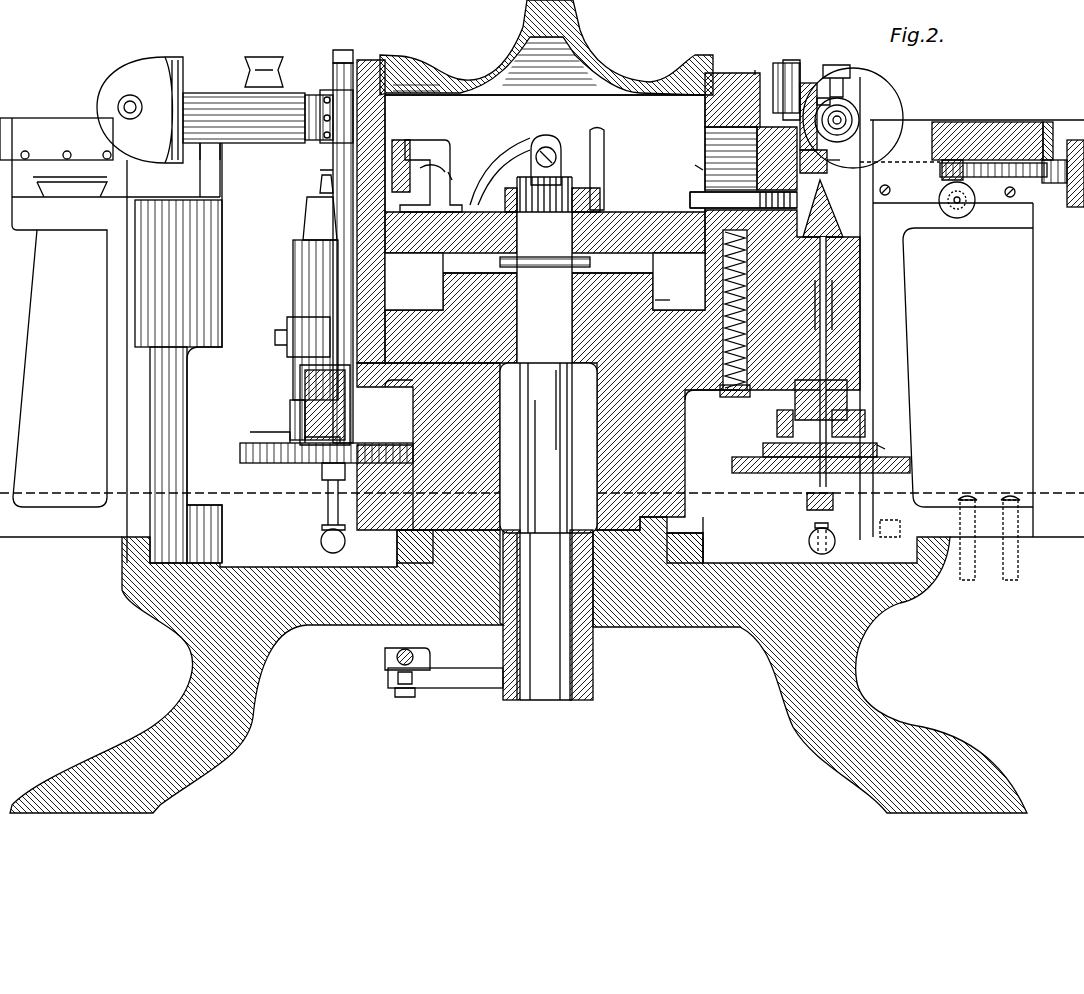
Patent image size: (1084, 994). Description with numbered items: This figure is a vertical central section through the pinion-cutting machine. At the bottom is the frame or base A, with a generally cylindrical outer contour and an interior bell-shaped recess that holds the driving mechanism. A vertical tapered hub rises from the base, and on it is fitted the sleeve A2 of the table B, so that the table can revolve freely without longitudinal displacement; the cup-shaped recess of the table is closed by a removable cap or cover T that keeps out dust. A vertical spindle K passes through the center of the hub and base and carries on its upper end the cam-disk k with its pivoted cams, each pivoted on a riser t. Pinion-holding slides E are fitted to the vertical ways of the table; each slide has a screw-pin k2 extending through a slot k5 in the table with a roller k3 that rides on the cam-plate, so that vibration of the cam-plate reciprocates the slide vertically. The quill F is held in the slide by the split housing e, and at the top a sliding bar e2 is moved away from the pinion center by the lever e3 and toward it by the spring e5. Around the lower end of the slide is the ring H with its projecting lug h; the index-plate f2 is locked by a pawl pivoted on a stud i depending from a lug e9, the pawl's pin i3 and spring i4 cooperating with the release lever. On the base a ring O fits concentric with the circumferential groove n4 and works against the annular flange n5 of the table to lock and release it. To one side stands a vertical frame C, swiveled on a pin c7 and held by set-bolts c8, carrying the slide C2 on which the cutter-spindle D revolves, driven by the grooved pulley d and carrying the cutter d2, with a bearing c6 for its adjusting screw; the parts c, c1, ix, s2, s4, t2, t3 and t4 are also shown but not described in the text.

The frame or base A is at (542, 648).
The sleeve of the table A2 is at (388, 490).
The table B is at (545, 111).
The vertical frame C is at (548, 327).
The slide C2 is at (56, 139).
The bracket c is at (590, 342).
The roller c1 is at (1040, 212).
The bearing c6 is at (1060, 135).
The pin c7 is at (896, 521).
The set-bolt c8 is at (989, 527).
The cutter-spindle D is at (277, 143).
The grooved pulley d is at (140, 110).
The cutter d2 is at (330, 80).
The pinion-holding slide E is at (357, 283).
The split housing e is at (833, 158).
The sliding bar e2 is at (330, 55).
The lever e3 is at (819, 87).
The spring e5 is at (790, 58).
The lug e9 is at (328, 392).
The quill F is at (305, 228).
The index-plate f2 is at (262, 452).
The ring H is at (785, 418).
The projecting lug h is at (865, 408).
The stud i is at (458, 145).
The pinion ix is at (300, 413).
The pin i3 is at (432, 655).
The spring i4 is at (458, 690).
The vertical spindle K is at (548, 438).
The cam-disk k is at (628, 212).
The screw-pin k2 is at (725, 200).
The roller k3 is at (696, 160).
The slot k5 is at (731, 158).
The circumferential groove n4 is at (453, 517).
The annular flange n5 is at (707, 520).
The ring O is at (395, 555).
The ball joint s2 is at (780, 480).
The screw s4 is at (888, 449).
The cap or cover T is at (676, 60).
The riser t is at (530, 160).
The spring t2 is at (660, 280).
The lug t3 is at (757, 72).
The valve pin t4 is at (838, 258).